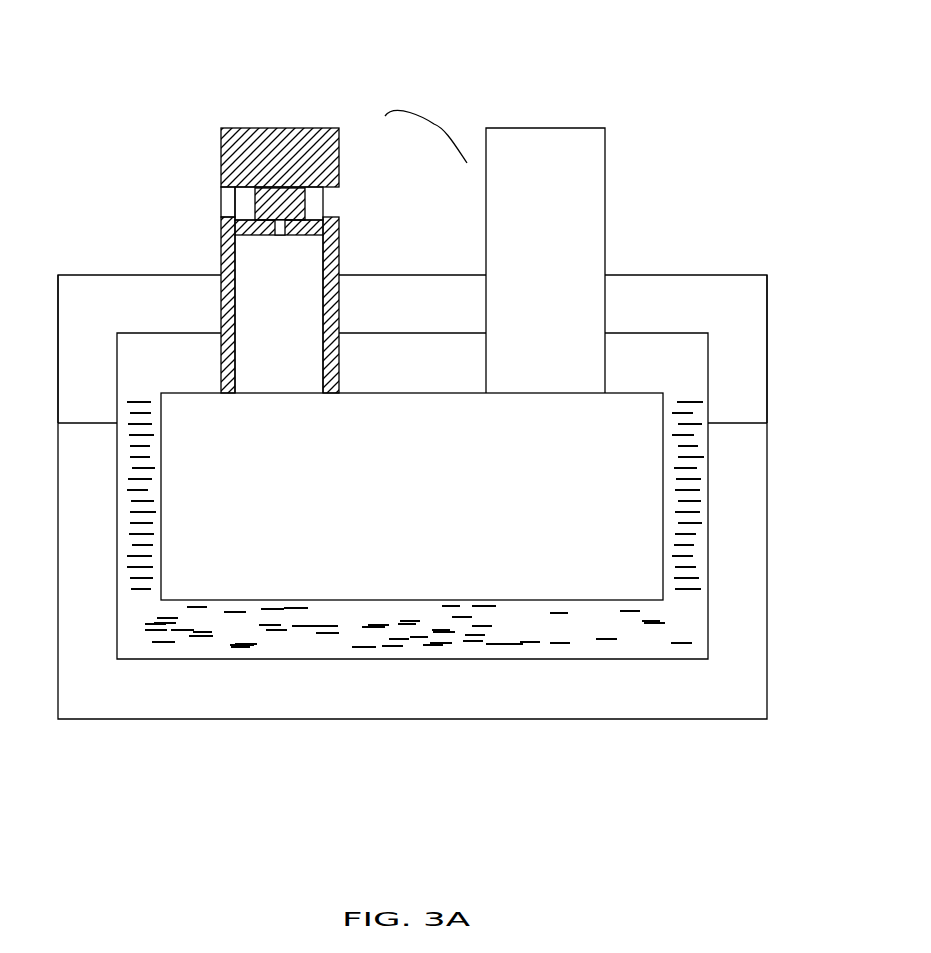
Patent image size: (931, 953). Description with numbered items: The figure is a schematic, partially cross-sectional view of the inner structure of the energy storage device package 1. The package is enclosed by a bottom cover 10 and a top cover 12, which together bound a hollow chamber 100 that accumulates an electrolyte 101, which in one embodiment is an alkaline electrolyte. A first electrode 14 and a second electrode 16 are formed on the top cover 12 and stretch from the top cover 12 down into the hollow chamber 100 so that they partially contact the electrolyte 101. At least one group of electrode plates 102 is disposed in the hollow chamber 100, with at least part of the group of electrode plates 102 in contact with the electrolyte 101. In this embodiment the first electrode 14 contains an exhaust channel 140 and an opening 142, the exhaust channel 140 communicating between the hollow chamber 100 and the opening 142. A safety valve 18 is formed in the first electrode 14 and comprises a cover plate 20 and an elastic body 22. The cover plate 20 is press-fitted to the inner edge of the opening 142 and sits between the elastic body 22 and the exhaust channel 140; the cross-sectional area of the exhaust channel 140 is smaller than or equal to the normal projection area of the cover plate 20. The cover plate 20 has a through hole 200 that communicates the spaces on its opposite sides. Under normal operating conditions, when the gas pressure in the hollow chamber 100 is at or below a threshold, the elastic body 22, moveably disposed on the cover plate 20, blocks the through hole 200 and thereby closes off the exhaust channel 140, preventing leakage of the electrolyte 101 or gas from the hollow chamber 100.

The energy storage device package 1 is at (89, 28).
The bottom cover 10 is at (75, 540).
The top cover 12 is at (72, 350).
The first electrode 14 is at (288, 127).
The second electrode 16 is at (592, 127).
The safety valve 18 is at (428, 124).
The cover plate 20 is at (325, 222).
The elastic body 22 is at (312, 185).
The hollow chamber 100 is at (317, 660).
The electrolyte 101 is at (690, 617).
The group of electrode plates 102 is at (663, 393).
The exhaust channel 140 is at (253, 263).
The opening 142 is at (228, 203).
The through hole 200 is at (284, 224).